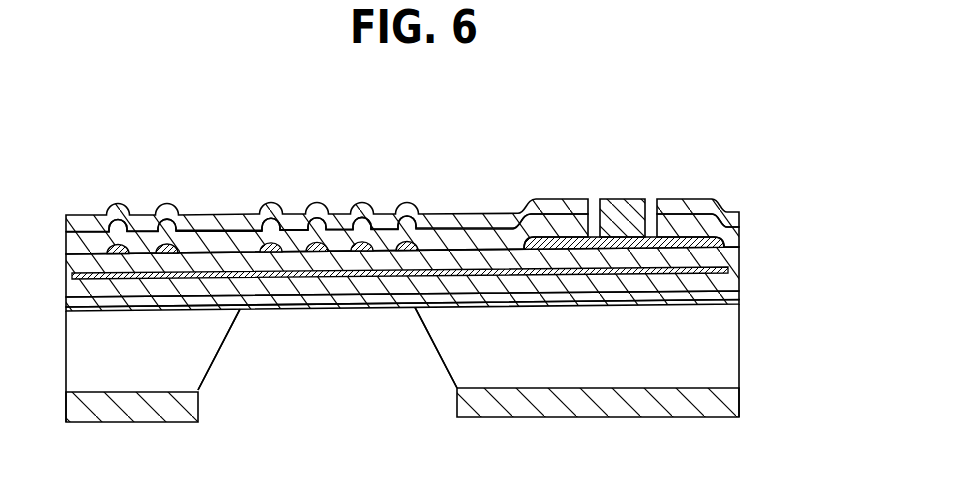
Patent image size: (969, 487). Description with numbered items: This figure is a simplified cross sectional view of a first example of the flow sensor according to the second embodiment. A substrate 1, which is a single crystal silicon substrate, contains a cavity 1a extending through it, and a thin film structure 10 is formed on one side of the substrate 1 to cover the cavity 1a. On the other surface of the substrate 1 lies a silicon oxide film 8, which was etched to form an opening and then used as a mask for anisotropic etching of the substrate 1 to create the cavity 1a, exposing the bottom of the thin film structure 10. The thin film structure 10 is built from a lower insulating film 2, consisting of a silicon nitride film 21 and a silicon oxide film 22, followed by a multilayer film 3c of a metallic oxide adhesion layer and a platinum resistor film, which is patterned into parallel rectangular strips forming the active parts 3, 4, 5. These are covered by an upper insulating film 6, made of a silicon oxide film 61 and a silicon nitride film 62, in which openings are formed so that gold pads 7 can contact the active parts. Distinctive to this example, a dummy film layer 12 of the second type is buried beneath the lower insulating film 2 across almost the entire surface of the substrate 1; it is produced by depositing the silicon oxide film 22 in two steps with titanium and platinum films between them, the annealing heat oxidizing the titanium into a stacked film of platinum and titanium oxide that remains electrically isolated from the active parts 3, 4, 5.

The substrate 1 is at (727, 358).
The cavity 1a is at (249, 382).
The lower insulating film 2 is at (453, 304).
The silicon nitride film 21 is at (743, 302).
The silicon oxide film 22 is at (720, 283).
The active part 3 is at (167, 229).
The multilayer film 3c is at (687, 240).
The active part 4 is at (318, 243).
The active part 5 is at (365, 243).
The upper insulating film 6 is at (452, 218).
The silicon oxide film 61 is at (732, 237).
The silicon nitride film 62 is at (733, 215).
The pad 7 is at (622, 198).
The silicon oxide film 8 is at (730, 400).
The thin film structure 10 is at (413, 318).
The dummy film layer 12 is at (707, 258).